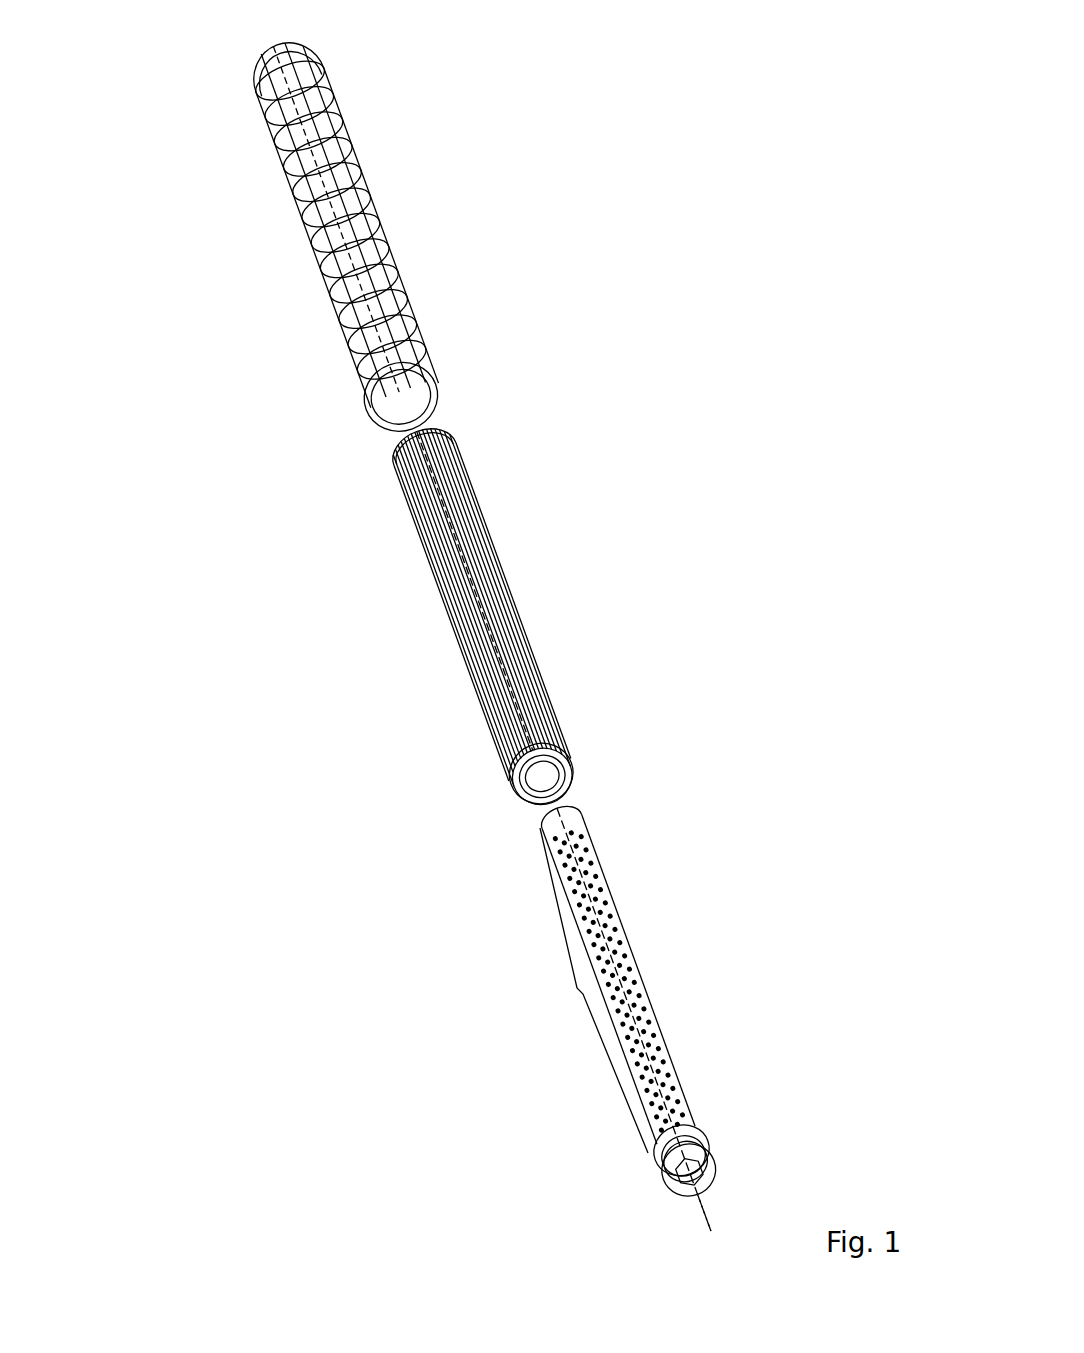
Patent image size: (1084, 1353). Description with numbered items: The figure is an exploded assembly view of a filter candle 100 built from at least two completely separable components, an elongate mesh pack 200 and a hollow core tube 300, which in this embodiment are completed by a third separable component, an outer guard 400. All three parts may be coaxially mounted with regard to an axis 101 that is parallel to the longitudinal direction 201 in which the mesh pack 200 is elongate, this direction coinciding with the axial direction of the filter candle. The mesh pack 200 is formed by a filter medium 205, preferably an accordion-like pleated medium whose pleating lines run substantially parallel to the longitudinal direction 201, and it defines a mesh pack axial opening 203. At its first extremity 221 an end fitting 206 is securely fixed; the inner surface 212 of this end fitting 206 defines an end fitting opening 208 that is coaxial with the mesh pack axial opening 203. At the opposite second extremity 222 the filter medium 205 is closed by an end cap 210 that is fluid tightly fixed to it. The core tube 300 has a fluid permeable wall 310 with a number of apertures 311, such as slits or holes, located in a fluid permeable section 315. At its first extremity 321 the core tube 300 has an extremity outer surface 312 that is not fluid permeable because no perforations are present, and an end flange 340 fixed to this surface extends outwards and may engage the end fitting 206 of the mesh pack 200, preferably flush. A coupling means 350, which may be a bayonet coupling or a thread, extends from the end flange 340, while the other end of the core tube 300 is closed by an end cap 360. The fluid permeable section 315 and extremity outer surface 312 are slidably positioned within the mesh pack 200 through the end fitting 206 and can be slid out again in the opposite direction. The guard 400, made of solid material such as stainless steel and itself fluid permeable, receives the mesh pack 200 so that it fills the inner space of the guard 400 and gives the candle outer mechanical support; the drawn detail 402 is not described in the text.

The filter candle 100 is at (275, 733).
The axis 101 is at (703, 1213).
The mesh pack 200 is at (713, 572).
The longitudinal direction 201 is at (553, 590).
The mesh pack axial opening 203 is at (537, 808).
The filter medium 205 is at (410, 543).
The end fitting 206 is at (568, 745).
The end fitting opening 208 is at (524, 790).
The end cap 210 is at (427, 425).
The inner surface 212 is at (560, 789).
The first extremity 221 is at (614, 752).
The second extremity 222 is at (360, 444).
The core tube 300 is at (757, 972).
The fluid permeable wall 310 is at (582, 850).
The apertures 311 is at (594, 900).
The extremity outer surface 312 is at (623, 1150).
The fluid permeable section 315 is at (581, 990).
The first extremity 321 is at (735, 1099).
The end flange 340 is at (721, 1159).
The coupling means 350 is at (668, 1166).
The end cap 360 is at (568, 812).
The guard 400 is at (485, 170).
The cage struts 402 is at (383, 290).